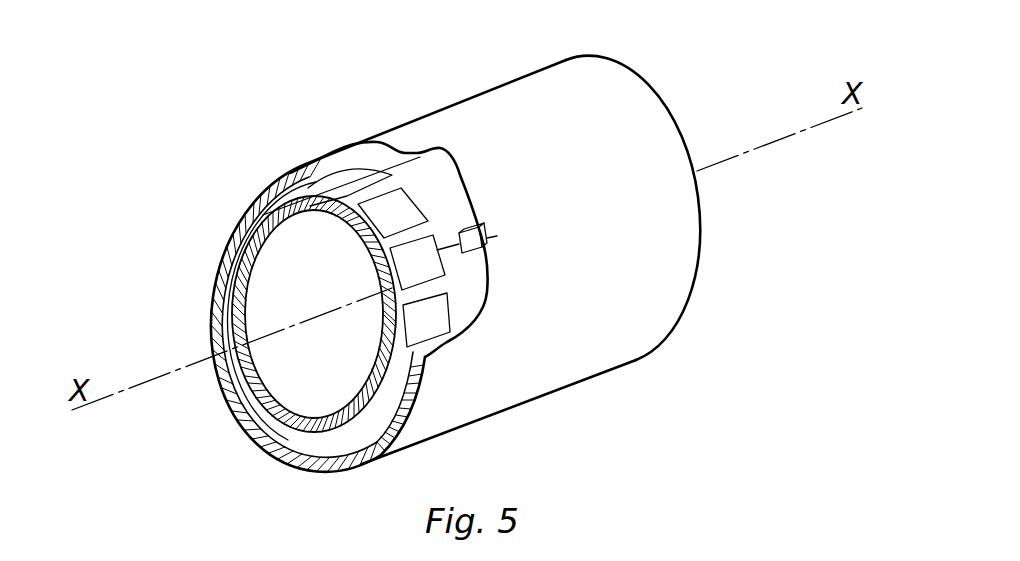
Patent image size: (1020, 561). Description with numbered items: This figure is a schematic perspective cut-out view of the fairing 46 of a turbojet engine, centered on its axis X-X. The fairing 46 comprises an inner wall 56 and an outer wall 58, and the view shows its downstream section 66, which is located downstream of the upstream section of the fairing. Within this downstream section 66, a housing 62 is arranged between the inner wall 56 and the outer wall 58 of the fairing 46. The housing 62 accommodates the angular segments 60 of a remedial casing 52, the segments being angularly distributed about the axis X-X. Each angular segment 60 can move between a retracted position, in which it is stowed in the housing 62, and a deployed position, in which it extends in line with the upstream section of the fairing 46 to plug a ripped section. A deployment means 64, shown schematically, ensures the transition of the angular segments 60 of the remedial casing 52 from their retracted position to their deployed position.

The fairing 46 is at (618, 322).
The remedial casing 52 is at (400, 187).
The inner wall 56 is at (355, 240).
The outer wall 58 is at (543, 100).
The angular segments 60 is at (340, 183).
The housing 62 is at (436, 183).
The deployment means 64 is at (494, 238).
The downstream section 66 is at (537, 364).